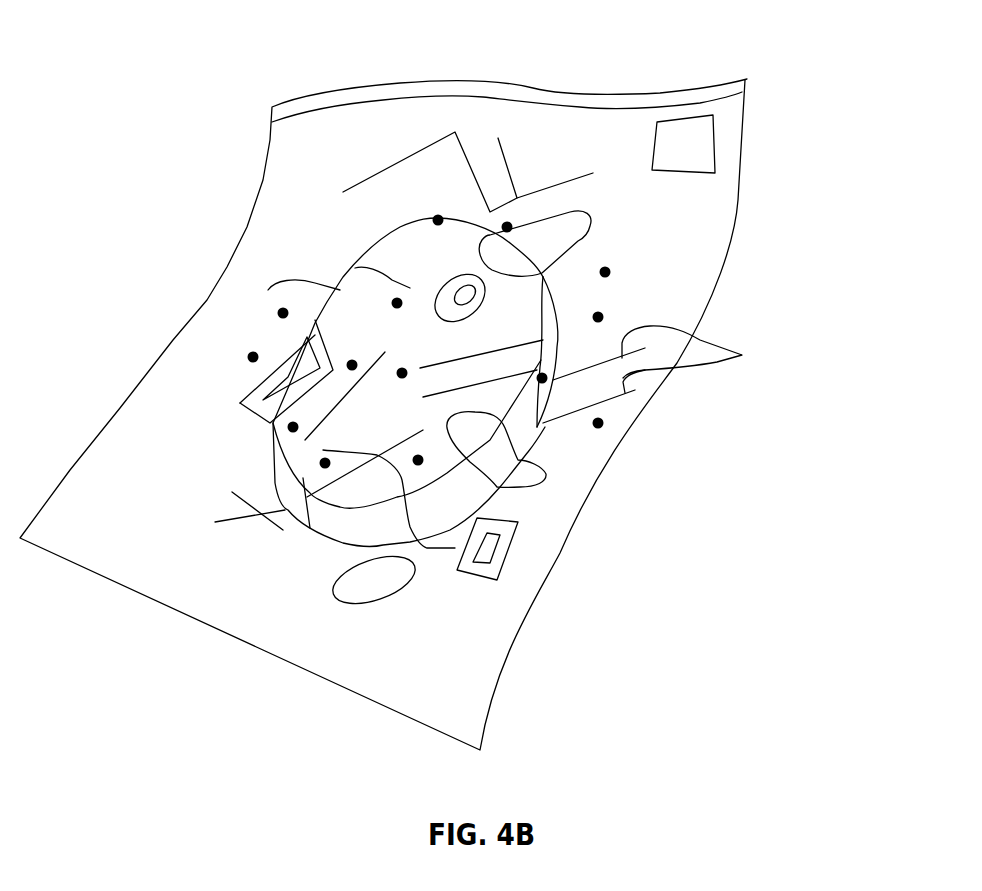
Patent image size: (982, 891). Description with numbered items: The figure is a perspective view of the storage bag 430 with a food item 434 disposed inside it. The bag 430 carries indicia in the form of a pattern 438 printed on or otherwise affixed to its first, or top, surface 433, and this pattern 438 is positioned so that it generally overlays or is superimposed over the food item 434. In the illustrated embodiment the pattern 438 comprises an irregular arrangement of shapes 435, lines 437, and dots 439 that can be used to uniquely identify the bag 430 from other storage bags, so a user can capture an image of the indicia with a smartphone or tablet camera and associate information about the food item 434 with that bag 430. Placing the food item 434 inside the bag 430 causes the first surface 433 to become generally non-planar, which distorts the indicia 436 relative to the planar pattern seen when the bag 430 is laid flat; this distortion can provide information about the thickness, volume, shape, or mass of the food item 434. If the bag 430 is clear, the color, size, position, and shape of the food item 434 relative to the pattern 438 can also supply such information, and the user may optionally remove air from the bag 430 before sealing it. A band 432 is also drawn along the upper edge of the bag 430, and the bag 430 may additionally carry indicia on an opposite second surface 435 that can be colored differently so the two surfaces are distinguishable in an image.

The storage bag 430 is at (186, 174).
The top band 432 is at (748, 82).
The first surface 433 is at (713, 240).
The food item 434 is at (520, 437).
The shapes 435 is at (723, 277).
The indicia 436 is at (683, 144).
The lines 437 is at (676, 374).
The pattern 438 is at (264, 537).
The dots 439 is at (278, 312).